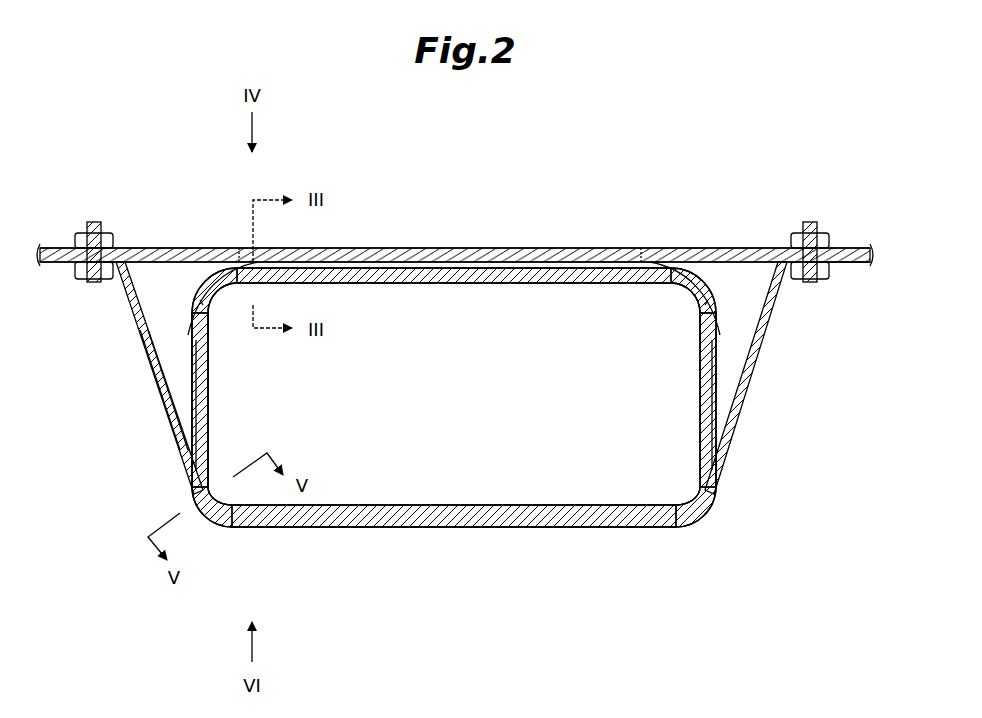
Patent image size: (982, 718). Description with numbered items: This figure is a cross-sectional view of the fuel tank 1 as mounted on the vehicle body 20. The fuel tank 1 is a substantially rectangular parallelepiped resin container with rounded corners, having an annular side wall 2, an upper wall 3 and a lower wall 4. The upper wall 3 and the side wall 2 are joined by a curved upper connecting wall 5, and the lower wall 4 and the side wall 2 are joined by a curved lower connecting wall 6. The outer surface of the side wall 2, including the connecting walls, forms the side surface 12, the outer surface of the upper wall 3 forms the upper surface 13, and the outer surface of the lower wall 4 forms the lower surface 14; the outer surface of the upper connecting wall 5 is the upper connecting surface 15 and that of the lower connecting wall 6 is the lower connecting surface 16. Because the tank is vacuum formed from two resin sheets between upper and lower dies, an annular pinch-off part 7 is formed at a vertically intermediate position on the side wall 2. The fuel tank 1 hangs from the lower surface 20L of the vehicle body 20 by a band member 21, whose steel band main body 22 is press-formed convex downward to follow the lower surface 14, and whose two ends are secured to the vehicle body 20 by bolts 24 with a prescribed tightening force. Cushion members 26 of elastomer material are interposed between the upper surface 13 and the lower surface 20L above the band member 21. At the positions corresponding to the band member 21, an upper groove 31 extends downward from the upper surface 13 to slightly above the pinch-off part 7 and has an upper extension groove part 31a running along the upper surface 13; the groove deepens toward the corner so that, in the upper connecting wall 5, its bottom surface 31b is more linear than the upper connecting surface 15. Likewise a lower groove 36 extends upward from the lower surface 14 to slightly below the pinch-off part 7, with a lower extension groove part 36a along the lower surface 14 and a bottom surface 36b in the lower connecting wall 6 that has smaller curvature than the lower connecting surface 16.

The fuel tank 1 is at (735, 422).
The side wall 2 is at (212, 400).
The upper wall 3 is at (428, 284).
The lower wall 4 is at (460, 505).
The upper connecting wall 5 is at (222, 300).
The lower connecting wall 6 is at (238, 500).
The pinch-off part 7 is at (178, 410).
The side surface 12 is at (148, 336).
The upper surface 13 is at (463, 268).
The lower surface 14 is at (487, 528).
The upper connecting surface 15 is at (200, 300).
The lower connecting surface 16 is at (190, 503).
The vehicle body 20 is at (748, 248).
The lower surface of vehicle body 20L is at (866, 263).
The band member 21 is at (165, 432).
The band main body 22 is at (140, 365).
The bolt 24 is at (99, 282).
The cushion member 26 is at (239, 262).
The upper groove 31 is at (218, 272).
The upper extension groove part 31a is at (256, 280).
The bottom surface of upper groove 31b is at (226, 305).
The lower groove 36 is at (205, 527).
The lower extension groove part 36a is at (240, 528).
The bottom surface of lower groove 36b is at (212, 455).